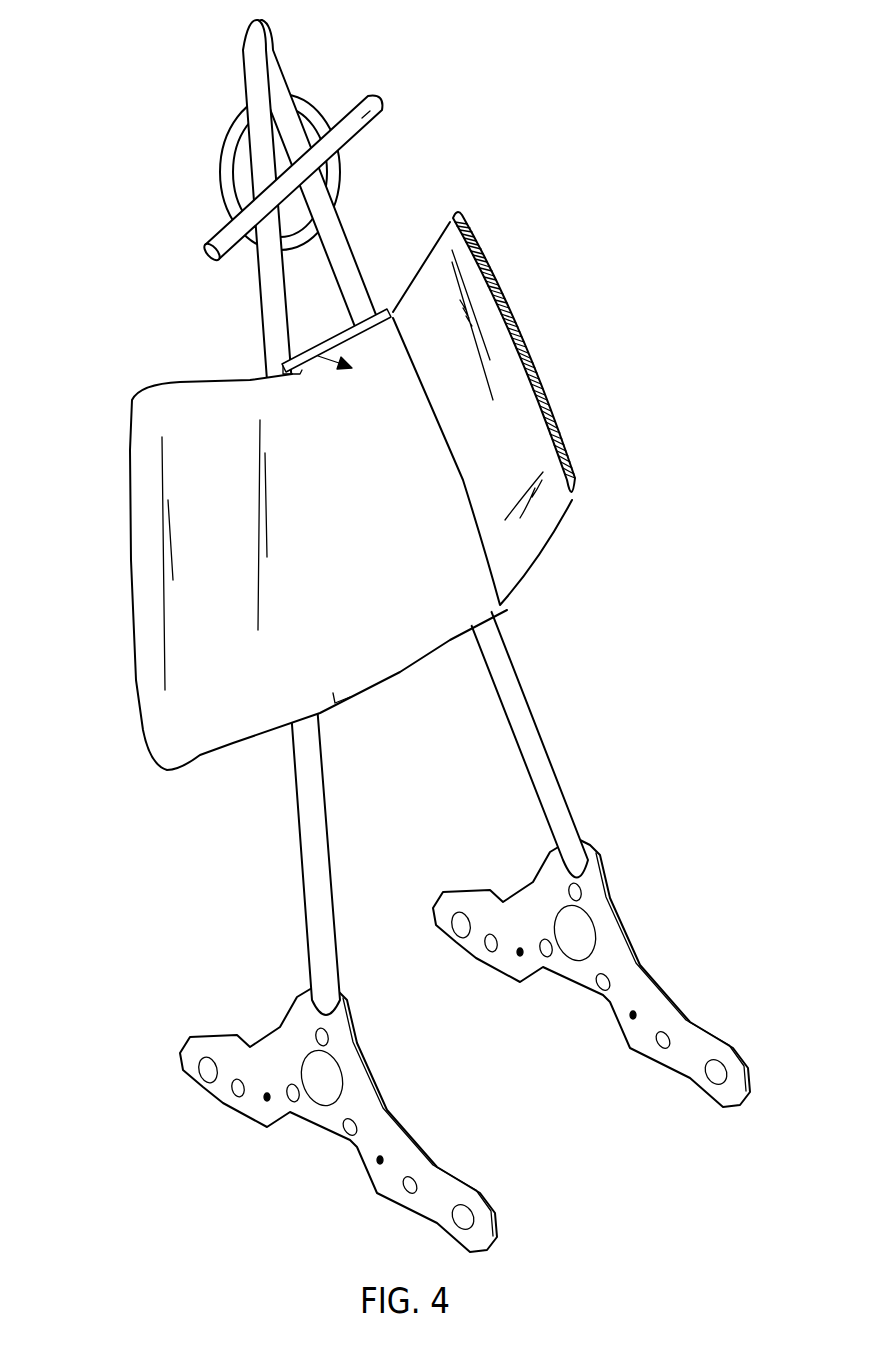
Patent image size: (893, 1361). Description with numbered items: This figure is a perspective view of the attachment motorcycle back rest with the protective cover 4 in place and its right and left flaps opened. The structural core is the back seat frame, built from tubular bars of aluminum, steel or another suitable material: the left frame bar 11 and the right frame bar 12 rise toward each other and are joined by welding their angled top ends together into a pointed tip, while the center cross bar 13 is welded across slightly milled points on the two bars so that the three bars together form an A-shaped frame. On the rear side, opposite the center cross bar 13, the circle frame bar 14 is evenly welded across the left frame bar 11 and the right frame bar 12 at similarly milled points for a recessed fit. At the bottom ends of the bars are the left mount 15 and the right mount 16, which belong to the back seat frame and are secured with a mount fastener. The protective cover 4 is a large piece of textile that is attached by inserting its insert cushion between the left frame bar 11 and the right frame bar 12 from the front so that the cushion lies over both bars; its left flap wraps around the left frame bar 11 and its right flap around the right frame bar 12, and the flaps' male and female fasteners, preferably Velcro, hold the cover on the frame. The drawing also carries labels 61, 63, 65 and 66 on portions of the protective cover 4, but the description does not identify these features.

The protective cover 4 is at (283, 365).
The left frame bar 11 is at (547, 772).
The right frame bar 12 is at (305, 822).
The center cross bar 13 is at (378, 103).
The circle frame bar 14 is at (218, 173).
The left mount 15 is at (608, 940).
The right mount 16 is at (243, 1055).
The clip 61 is at (345, 337).
The left panel 63 is at (197, 650).
The right panel 65 is at (545, 520).
The hatched edge 66 is at (498, 278).